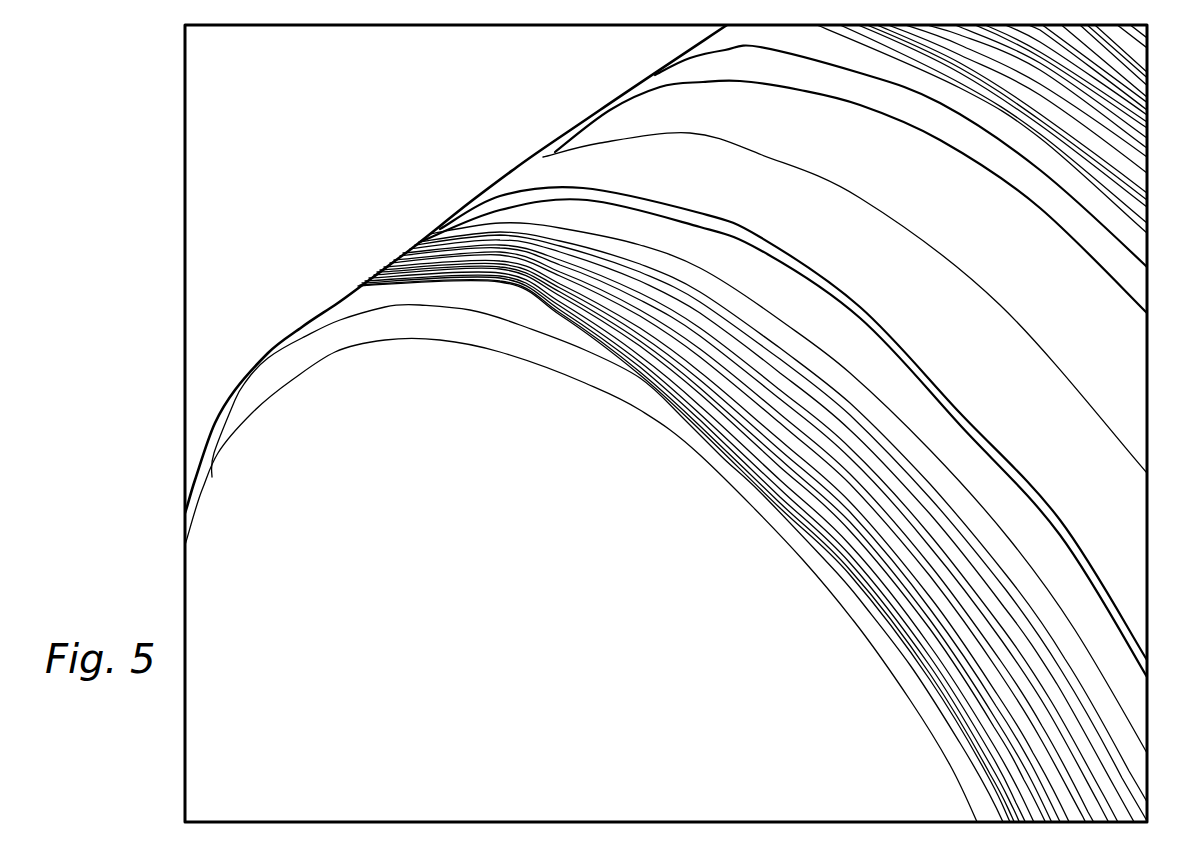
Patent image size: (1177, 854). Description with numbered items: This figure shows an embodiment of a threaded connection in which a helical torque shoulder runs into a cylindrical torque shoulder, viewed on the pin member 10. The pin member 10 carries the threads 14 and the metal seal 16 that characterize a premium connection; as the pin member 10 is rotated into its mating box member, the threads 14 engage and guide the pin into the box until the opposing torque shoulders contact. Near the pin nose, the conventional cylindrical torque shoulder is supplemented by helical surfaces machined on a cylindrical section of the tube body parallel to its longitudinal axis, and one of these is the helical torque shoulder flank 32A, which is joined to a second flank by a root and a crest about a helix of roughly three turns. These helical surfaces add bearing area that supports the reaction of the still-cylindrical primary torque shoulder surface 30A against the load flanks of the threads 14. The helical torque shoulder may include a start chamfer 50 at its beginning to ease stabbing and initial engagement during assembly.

The pin member 10 is at (485, 179).
The threads 14 is at (678, 41).
The metal seal 16 is at (510, 169).
The primary torque shoulder surface 30A is at (330, 343).
The helical torque shoulder flank 32A is at (437, 272).
The start chamfer 50 is at (373, 298).